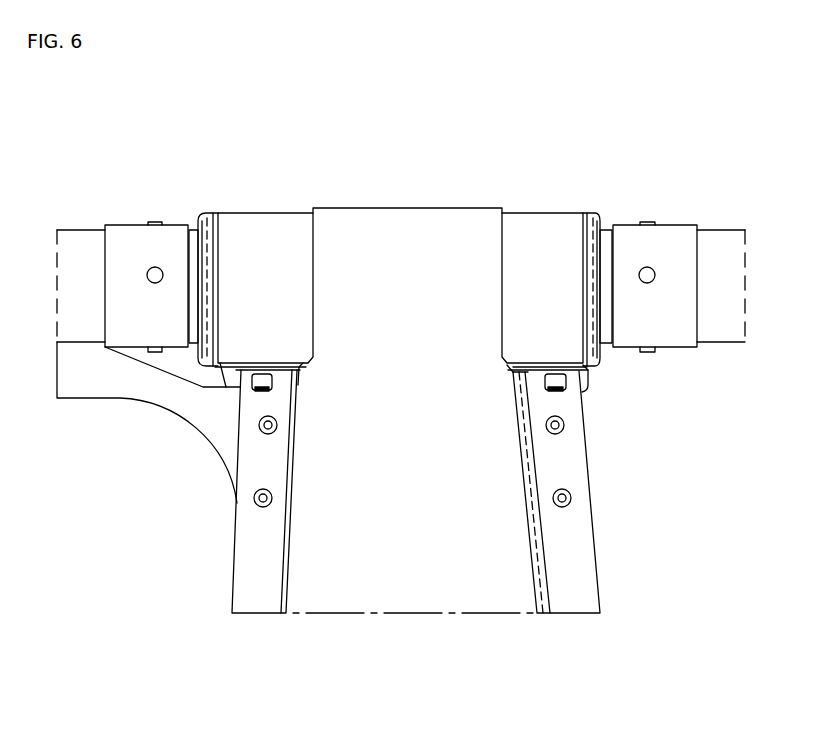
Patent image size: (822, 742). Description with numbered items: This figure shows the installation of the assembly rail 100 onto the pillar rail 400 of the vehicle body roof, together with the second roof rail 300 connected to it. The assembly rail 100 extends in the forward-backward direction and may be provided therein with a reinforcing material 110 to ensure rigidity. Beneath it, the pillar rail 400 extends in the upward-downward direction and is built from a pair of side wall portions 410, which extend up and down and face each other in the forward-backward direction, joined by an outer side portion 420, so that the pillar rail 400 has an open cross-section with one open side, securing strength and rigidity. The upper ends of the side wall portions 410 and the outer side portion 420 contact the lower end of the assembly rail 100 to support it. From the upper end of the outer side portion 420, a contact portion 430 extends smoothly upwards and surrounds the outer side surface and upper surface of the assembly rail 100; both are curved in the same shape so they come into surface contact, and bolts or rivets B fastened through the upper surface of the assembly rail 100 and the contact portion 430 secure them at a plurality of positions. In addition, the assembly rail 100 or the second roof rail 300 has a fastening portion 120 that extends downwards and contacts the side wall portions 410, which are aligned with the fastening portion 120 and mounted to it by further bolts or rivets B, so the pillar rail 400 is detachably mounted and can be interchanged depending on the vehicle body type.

The assembly rail 100 is at (549, 213).
The reinforcing material 110 is at (268, 233).
The fastening portion 120 is at (157, 392).
The second roof rail 300 is at (80, 224).
The pillar rail 400 is at (598, 552).
The side wall portions 410 is at (257, 587).
The outer side portion 420 is at (410, 582).
The contact portion 430 is at (405, 228).
The bolts or rivets B is at (155, 266).